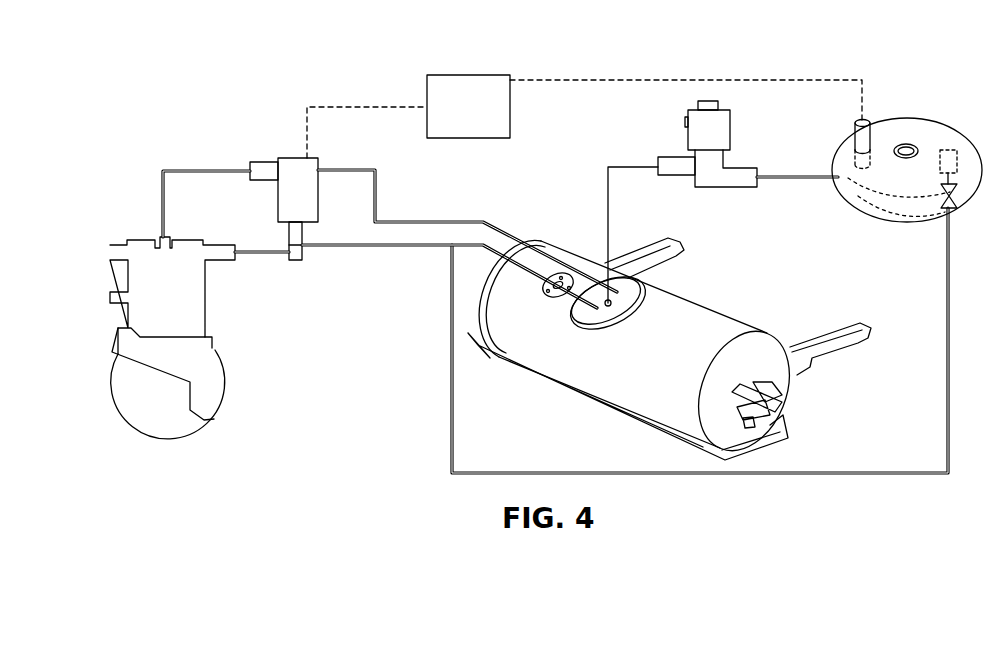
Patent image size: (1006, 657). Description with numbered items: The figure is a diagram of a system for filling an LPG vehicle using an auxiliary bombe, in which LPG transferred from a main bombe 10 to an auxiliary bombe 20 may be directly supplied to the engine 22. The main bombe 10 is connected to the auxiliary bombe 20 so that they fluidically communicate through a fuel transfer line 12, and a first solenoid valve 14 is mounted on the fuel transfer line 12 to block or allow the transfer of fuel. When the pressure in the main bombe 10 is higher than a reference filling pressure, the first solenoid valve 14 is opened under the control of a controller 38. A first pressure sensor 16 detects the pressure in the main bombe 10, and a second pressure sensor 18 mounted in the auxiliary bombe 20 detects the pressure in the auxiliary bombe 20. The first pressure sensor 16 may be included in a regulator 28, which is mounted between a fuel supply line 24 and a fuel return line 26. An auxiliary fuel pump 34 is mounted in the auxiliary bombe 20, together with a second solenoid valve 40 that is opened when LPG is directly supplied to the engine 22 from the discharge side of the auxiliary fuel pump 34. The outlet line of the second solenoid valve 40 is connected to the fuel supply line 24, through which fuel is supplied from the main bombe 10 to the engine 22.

The main bombe 10 is at (669, 351).
The fuel transfer line 12 is at (605, 228).
The first solenoid valve 14 is at (707, 172).
The first pressure sensor 16 is at (282, 273).
The second pressure sensor 18 is at (881, 130).
The auxiliary bombe 20 is at (869, 184).
The engine 22 is at (183, 338).
The fuel supply line 24 is at (449, 284).
The fuel return line 26 is at (467, 228).
The regulator 28 is at (240, 173).
The auxiliary fuel pump 34 is at (939, 133).
The controller 38 is at (584, 103).
The second solenoid valve 40 is at (922, 225).